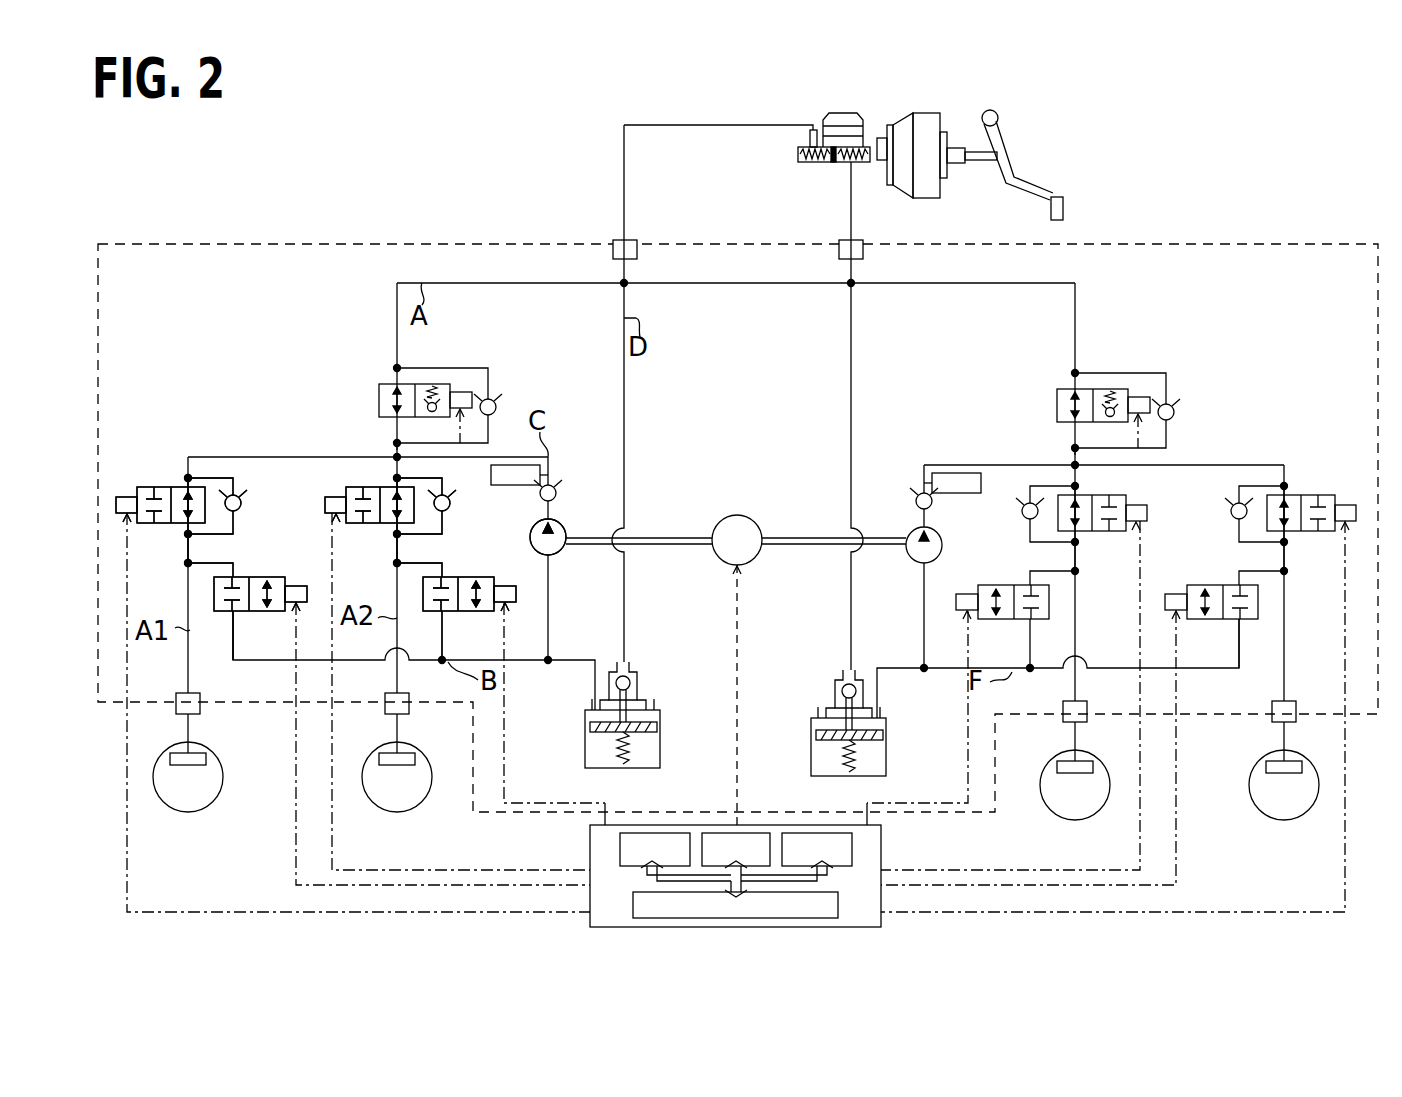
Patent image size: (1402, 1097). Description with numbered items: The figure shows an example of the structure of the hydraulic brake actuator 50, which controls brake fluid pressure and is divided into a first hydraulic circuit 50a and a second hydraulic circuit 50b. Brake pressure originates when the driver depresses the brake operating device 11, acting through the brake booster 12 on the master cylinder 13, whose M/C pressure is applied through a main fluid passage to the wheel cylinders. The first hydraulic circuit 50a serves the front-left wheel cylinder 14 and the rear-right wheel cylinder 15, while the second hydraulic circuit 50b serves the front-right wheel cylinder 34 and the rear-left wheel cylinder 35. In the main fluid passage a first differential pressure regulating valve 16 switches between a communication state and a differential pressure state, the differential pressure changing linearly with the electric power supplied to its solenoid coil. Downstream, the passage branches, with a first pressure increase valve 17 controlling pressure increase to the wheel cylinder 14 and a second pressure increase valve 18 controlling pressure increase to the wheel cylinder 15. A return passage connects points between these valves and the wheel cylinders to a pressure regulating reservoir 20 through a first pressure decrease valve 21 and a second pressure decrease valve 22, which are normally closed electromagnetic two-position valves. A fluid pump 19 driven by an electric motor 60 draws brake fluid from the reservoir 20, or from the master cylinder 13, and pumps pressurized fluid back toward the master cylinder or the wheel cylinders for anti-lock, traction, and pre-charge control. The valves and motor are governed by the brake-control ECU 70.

The brake operating device 11 is at (1003, 150).
The brake booster 12 is at (930, 113).
The master cylinder 13 is at (790, 150).
The front-left wheel cylinder 14 is at (172, 758).
The rear-right wheel cylinder 15 is at (380, 758).
The first differential pressure regulating valve 16 is at (379, 400).
The first pressure increase valve 17 is at (185, 487).
The second pressure increase valve 18 is at (388, 488).
The fluid pump 19 is at (530, 540).
The pressure regulating reservoir 20 is at (582, 752).
The first pressure decrease valve 21 is at (238, 577).
The second pressure decrease valve 22 is at (446, 578).
The front-right wheel cylinder 34 is at (1318, 760).
The rear-left wheel cylinder 35 is at (1108, 757).
The hydraulic brake actuator 50 is at (1376, 243).
The first hydraulic circuit 50a is at (172, 300).
The second hydraulic circuit 50b is at (1300, 306).
The electric motor 60 is at (718, 522).
The brake-control ECU 70 is at (883, 838).